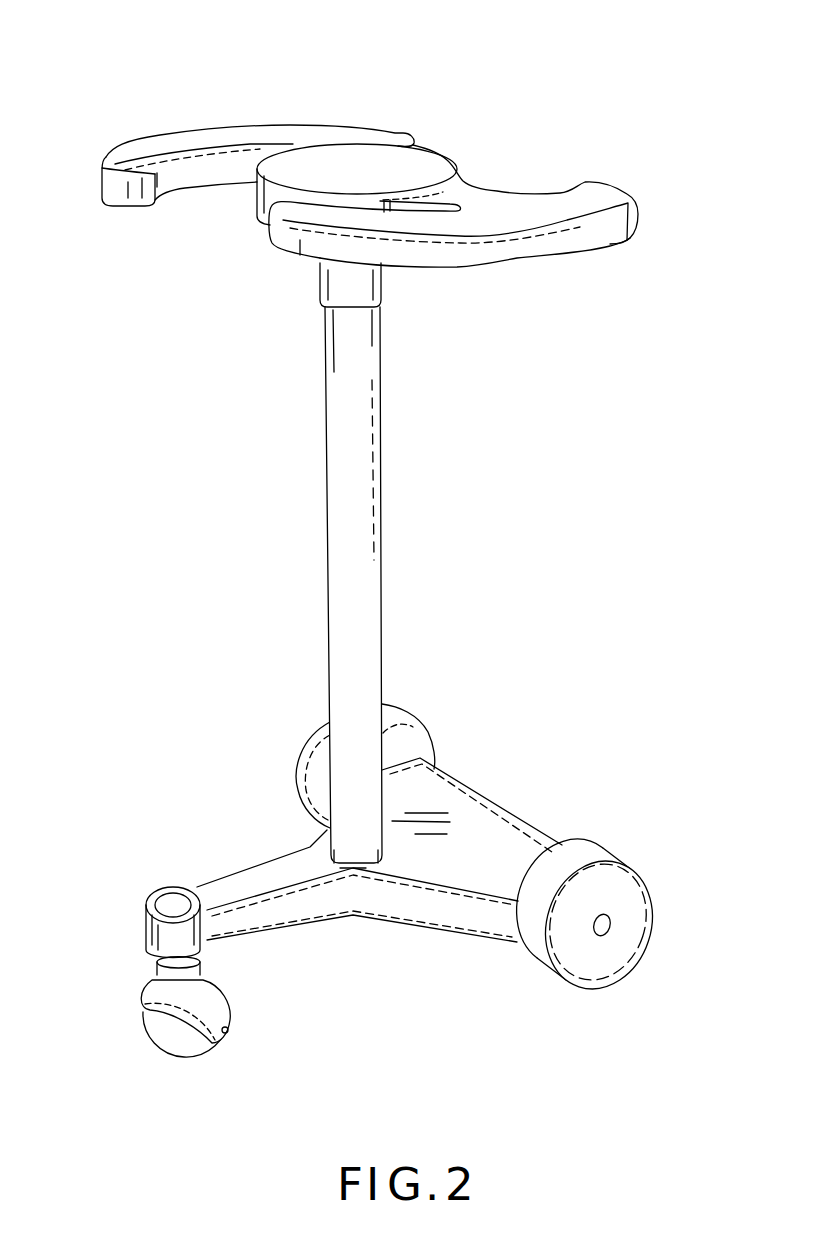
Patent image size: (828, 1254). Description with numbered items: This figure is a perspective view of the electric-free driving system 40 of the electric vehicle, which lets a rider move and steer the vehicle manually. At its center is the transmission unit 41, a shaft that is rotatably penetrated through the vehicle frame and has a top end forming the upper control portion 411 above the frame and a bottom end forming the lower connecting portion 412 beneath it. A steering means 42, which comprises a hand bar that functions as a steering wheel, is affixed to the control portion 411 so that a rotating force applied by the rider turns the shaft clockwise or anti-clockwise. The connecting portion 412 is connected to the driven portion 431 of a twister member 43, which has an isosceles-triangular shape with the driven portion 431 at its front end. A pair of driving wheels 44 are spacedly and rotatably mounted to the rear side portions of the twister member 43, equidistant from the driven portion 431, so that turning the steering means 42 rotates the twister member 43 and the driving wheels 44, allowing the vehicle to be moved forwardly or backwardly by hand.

The electric-free driving system 40 is at (346, 137).
The transmission unit 41 is at (273, 563).
The upper control portion 411 is at (308, 302).
The lower connecting portion 412 is at (355, 844).
The steering means 42 is at (548, 214).
The twister member 43 is at (351, 927).
The driven portion 431 is at (355, 869).
The driving wheels 44 is at (418, 744).